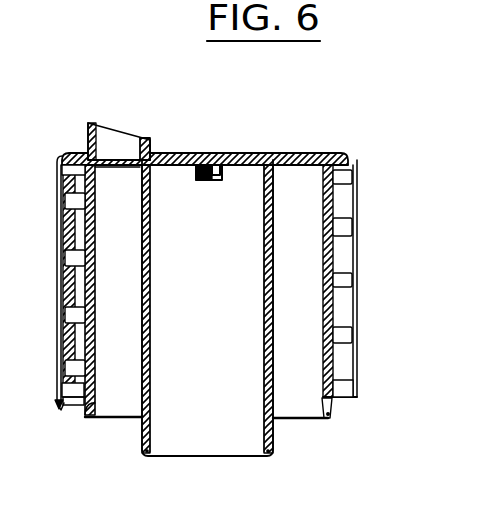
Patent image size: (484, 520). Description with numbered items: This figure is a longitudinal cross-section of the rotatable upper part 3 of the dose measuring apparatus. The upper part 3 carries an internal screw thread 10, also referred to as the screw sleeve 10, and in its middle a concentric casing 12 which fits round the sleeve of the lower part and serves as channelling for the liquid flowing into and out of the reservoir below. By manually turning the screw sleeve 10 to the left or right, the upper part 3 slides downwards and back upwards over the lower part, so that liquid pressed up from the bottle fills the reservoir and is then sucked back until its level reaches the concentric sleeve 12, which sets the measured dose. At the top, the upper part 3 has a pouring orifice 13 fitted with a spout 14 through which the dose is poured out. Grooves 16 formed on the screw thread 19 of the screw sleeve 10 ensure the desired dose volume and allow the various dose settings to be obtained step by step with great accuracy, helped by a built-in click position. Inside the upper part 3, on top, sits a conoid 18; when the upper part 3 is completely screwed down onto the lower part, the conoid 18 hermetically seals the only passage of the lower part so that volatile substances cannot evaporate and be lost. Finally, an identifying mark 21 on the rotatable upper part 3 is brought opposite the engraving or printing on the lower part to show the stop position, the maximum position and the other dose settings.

The rotatable upper part 3 is at (366, 197).
The internal screw thread 10 is at (322, 208).
The concentric casing 12 is at (272, 343).
The pouring orifice 13 is at (115, 145).
The spout 14 is at (150, 148).
The grooves 16 is at (70, 403).
The conoid 18 is at (208, 187).
The screw thread 19 is at (352, 272).
The identifying mark 21 is at (60, 408).